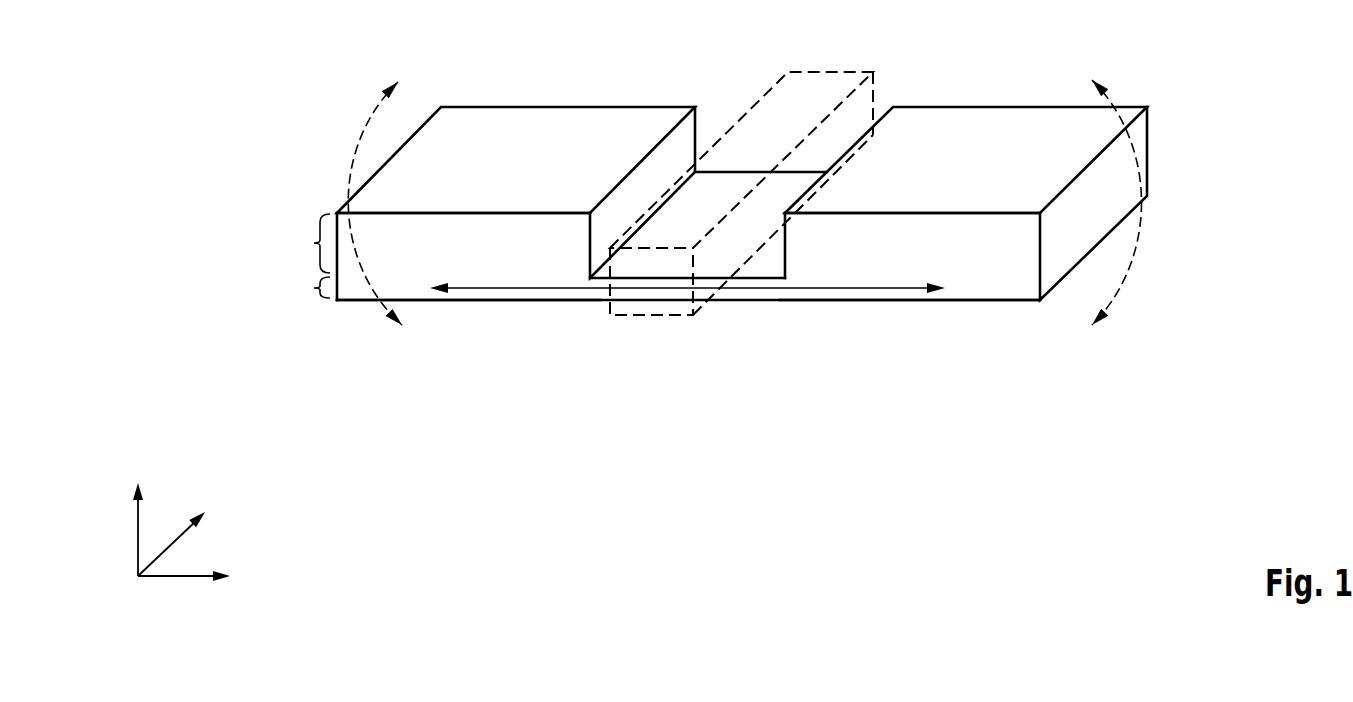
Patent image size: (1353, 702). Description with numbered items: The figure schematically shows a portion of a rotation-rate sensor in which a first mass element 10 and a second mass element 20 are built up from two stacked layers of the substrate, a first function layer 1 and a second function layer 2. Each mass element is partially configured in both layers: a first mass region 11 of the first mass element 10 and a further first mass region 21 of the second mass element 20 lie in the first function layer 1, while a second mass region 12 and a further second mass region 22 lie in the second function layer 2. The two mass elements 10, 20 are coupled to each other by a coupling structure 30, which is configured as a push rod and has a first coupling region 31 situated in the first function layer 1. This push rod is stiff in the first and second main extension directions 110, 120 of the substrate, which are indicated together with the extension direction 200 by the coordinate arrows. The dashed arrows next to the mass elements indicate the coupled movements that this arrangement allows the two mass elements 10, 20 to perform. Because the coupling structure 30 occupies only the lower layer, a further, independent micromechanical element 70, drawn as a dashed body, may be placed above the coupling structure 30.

The first function layer 1 is at (666, 289).
The second function layer 2 is at (314, 256).
The first mass element 10 is at (543, 132).
The first mass region 11 is at (470, 295).
The second mass region 12 is at (513, 243).
The second mass element 20 is at (993, 132).
The further first mass region 21 is at (968, 295).
The further second mass region 22 is at (1012, 247).
The coupling structure 30 is at (708, 262).
The first coupling region 31 is at (762, 267).
The micromechanical element 70 is at (813, 88).
The first main extension direction 110 is at (278, 588).
The second main extension direction 120 is at (228, 505).
The extension direction 200 is at (160, 480).